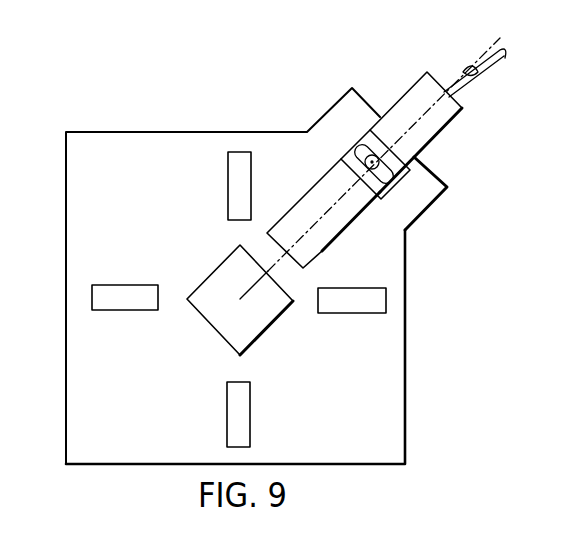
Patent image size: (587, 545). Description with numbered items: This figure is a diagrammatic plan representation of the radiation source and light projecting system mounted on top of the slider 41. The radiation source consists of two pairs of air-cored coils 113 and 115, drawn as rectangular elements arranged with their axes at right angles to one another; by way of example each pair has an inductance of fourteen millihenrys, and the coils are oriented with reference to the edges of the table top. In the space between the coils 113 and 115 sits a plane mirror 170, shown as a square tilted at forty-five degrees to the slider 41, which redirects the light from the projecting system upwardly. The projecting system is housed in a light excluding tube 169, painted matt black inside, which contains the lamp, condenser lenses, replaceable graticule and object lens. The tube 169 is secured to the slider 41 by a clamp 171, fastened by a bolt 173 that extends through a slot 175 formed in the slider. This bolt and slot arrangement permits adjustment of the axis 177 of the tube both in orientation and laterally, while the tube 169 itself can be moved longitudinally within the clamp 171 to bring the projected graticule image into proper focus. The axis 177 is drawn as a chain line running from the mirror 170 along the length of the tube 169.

The slider 41 is at (392, 387).
The pair of air-cored coils 113 is at (131, 312).
The pair of air-cored coils 115 is at (233, 182).
The light excluding tube 169 is at (343, 227).
The plane mirror 170 is at (266, 334).
The clamp 171 is at (397, 181).
The bolt 173 is at (379, 158).
The slot 175 is at (354, 177).
The axis of the tube 177 is at (333, 202).